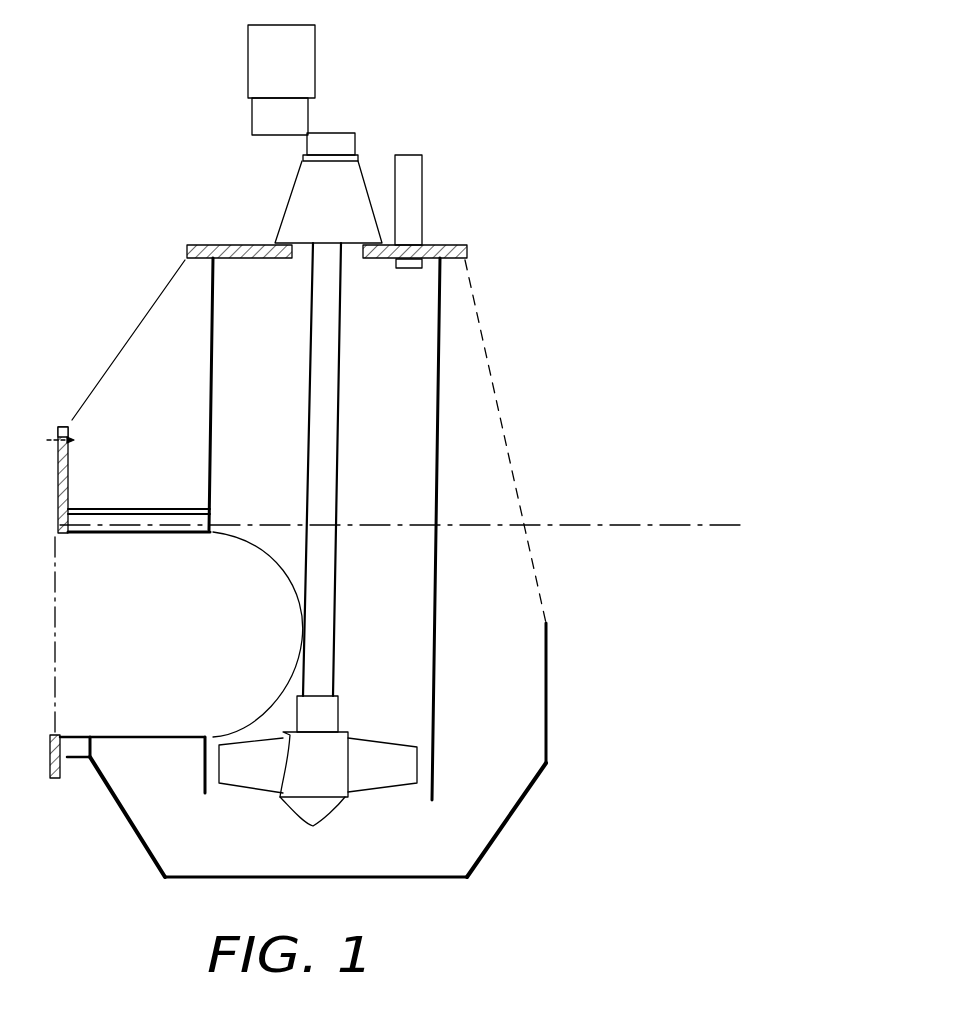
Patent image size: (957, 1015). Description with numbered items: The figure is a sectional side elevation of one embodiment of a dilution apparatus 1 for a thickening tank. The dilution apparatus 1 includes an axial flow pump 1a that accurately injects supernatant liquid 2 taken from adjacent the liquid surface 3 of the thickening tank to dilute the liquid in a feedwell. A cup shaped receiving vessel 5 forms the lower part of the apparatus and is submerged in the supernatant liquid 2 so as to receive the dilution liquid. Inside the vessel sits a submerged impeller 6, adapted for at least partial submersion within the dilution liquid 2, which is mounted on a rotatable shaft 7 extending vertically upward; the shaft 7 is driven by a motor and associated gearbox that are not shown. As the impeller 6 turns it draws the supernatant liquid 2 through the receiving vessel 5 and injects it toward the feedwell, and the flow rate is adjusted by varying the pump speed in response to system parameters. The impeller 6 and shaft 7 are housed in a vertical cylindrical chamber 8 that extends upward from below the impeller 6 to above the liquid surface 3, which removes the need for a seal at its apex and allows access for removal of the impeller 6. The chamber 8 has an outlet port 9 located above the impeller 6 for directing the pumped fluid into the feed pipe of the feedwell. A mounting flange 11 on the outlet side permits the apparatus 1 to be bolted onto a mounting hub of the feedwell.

The dilution apparatus 1 is at (530, 169).
The axial flow pump 1a is at (262, 408).
The supernatant liquid 2 is at (668, 578).
The liquid surface 3 is at (605, 527).
The receiving vessel 5 is at (546, 743).
The impeller 6 is at (328, 785).
The shaft 7 is at (328, 397).
The vertical cylindrical chamber 8 is at (432, 663).
The outlet port 9 is at (268, 705).
The mounting flange 11 is at (58, 478).